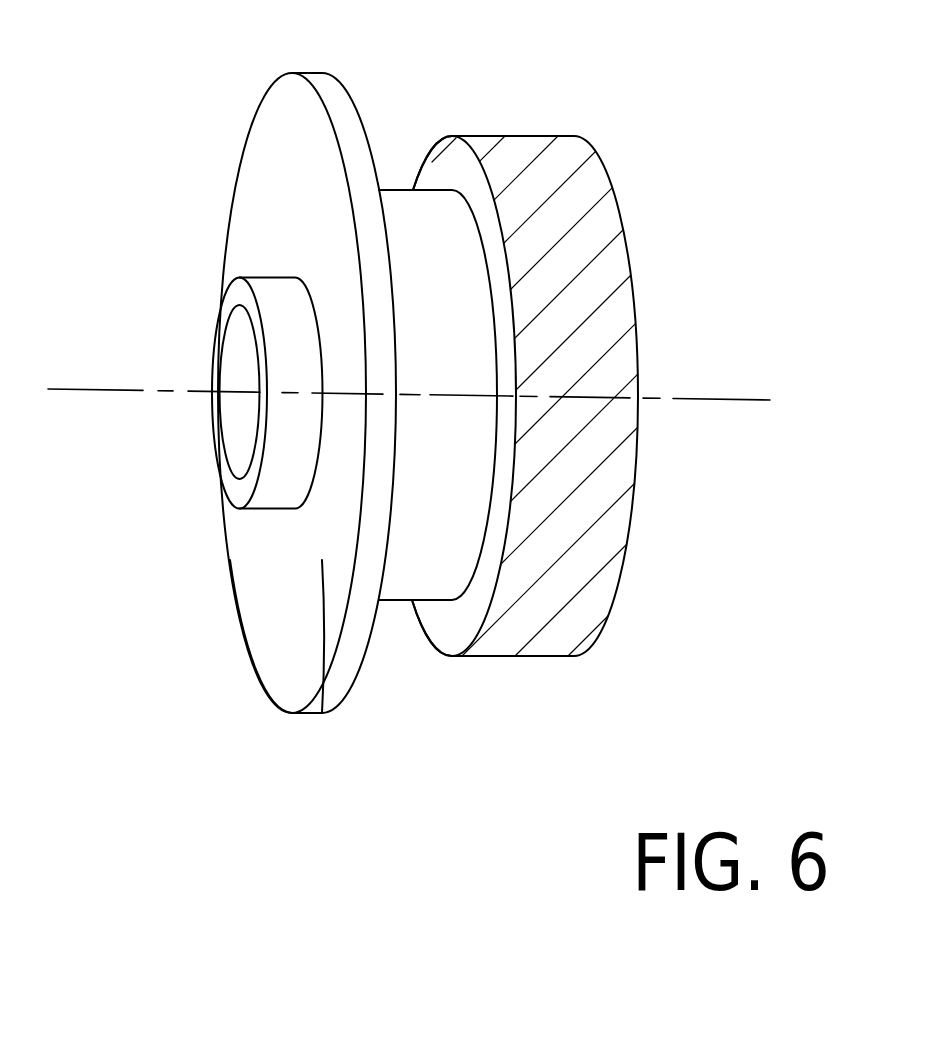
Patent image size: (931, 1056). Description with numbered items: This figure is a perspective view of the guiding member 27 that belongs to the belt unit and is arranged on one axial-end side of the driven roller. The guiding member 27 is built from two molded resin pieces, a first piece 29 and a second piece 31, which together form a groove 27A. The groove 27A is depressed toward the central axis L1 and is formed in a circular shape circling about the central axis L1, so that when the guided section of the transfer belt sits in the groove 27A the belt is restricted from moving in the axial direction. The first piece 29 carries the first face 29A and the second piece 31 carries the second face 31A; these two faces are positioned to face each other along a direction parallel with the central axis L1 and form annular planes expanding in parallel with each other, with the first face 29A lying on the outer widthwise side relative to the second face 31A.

The guiding member 27 is at (430, 425).
The groove 27A is at (395, 167).
The first piece 29 is at (267, 590).
The first face 29A is at (363, 660).
The second piece 31 is at (567, 523).
The second face 31A is at (432, 652).
The central axis L1 is at (90, 389).